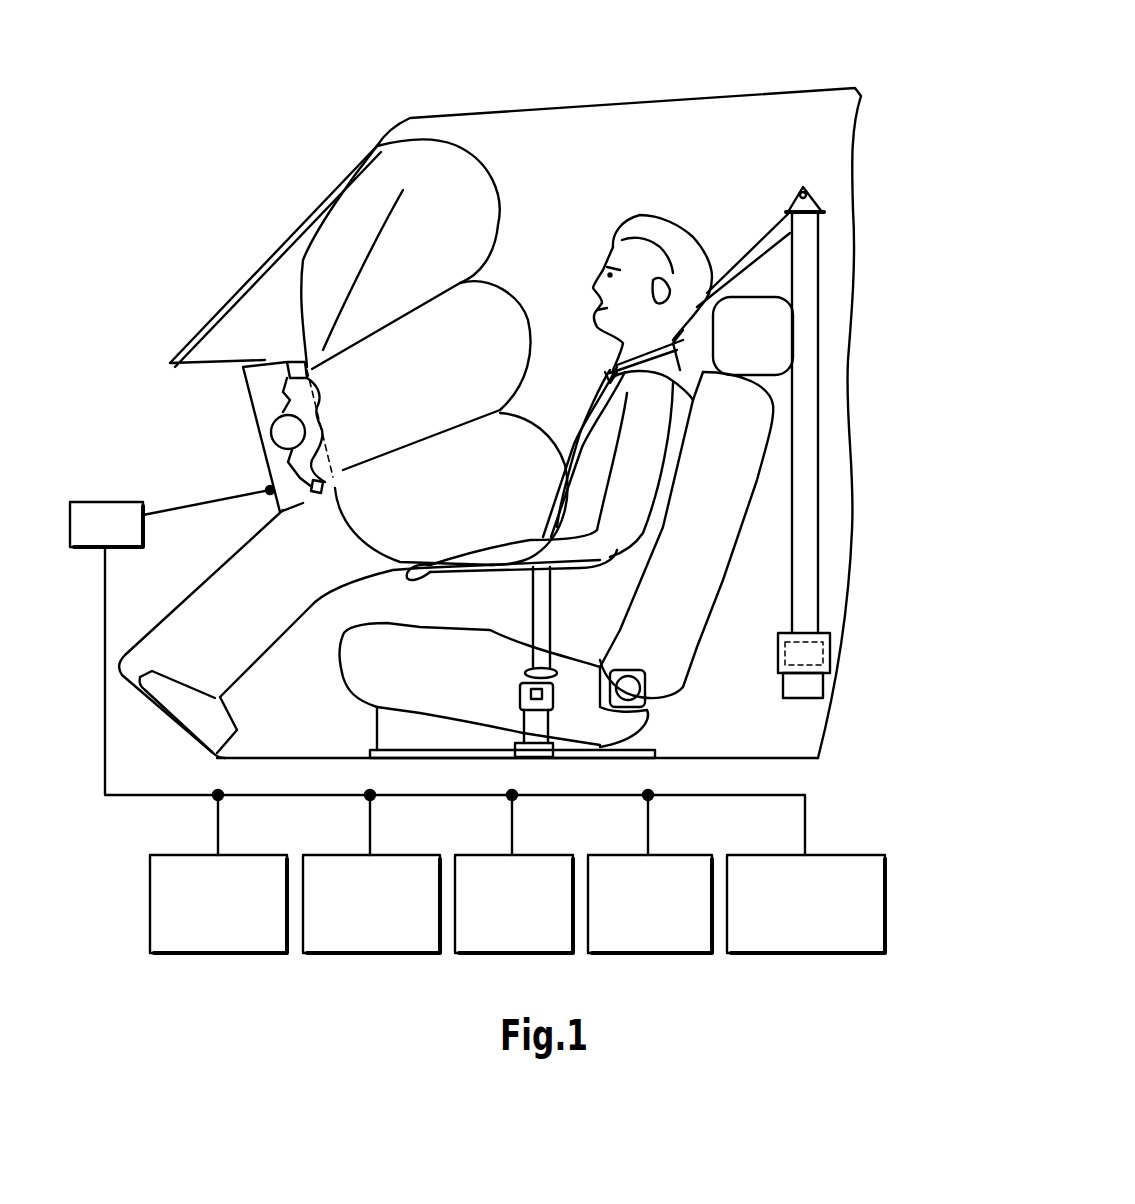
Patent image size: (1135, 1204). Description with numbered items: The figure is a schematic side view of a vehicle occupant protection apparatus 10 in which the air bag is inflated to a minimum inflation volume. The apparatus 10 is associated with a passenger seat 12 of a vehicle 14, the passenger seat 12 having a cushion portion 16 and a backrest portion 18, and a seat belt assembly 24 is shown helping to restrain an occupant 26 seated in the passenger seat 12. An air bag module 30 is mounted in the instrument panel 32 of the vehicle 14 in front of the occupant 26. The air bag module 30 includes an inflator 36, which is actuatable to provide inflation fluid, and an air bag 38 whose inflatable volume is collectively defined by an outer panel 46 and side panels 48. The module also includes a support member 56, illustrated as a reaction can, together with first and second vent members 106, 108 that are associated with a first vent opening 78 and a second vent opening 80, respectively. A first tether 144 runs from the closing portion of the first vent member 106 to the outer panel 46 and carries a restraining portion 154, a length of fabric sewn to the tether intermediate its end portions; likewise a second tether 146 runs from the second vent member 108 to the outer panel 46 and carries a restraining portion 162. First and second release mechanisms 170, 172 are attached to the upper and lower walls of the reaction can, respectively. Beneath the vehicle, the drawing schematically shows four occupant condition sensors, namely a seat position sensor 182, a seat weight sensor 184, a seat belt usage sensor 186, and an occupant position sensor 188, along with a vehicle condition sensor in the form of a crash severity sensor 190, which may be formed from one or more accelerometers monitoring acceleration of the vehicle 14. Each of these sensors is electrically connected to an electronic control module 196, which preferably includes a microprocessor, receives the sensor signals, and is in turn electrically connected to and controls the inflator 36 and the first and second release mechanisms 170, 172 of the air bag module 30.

The vehicle occupant protection apparatus 10 is at (597, 76).
The passenger seat 12 is at (599, 534).
The vehicle 14 is at (800, 87).
The cushion portion 16 is at (403, 677).
The backrest portion 18 is at (707, 527).
The seat belt assembly 24 is at (843, 556).
The occupant 26 is at (704, 218).
The air bag module 30 is at (275, 348).
The instrument panel 32 is at (223, 358).
The inflator 36 is at (310, 405).
The air bag 38 is at (519, 186).
The outer panel 46 is at (507, 300).
The side panels 48 is at (313, 253).
The support member 56 is at (315, 432).
The first vent opening 78 is at (268, 413).
The second vent opening 80 is at (276, 452).
The first vent member 106 is at (280, 410).
The second vent member 108 is at (302, 468).
The first tether 144 is at (392, 321).
The second tether 146 is at (447, 426).
The restraining portion 154 is at (328, 341).
The restraining portion 162 is at (352, 486).
The first release mechanism 170 is at (263, 356).
The second release mechanism 172 is at (283, 512).
The seat position sensor 182 is at (318, 955).
The seat weight sensor 184 is at (495, 955).
The seat belt usage sensor 186 is at (612, 955).
The occupant position sensor 188 is at (780, 955).
The crash severity sensor 190 is at (203, 955).
The electronic control module 196 is at (95, 507).